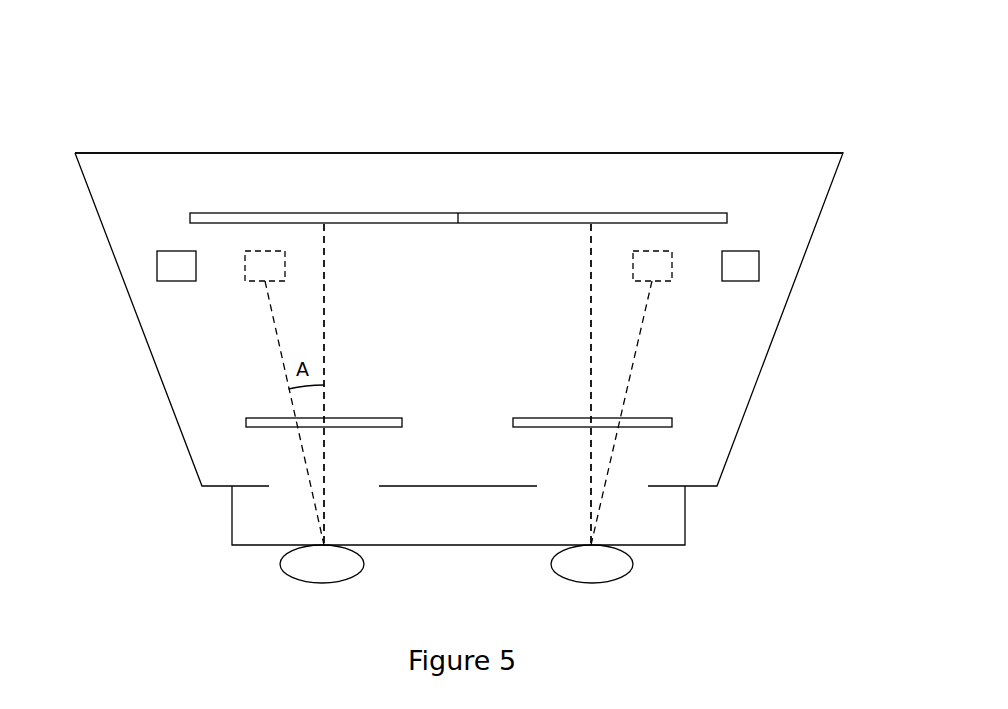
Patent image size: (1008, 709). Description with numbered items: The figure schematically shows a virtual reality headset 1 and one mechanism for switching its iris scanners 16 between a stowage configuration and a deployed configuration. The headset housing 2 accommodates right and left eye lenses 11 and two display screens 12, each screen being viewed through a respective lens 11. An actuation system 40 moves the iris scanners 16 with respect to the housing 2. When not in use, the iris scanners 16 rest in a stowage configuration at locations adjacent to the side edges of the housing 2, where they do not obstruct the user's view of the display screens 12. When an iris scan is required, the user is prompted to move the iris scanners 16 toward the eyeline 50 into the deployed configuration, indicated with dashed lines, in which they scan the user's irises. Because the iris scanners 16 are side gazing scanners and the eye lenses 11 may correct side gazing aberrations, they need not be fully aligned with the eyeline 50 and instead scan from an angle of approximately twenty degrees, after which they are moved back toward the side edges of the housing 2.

The virtual reality headset 1 is at (122, 140).
The housing 2 is at (706, 154).
The display screens 12 is at (403, 213).
The actuation system 40 is at (742, 230).
The iris scanners 16 is at (157, 265).
The eyeline 50 is at (590, 353).
The eye lenses 11 is at (246, 422).